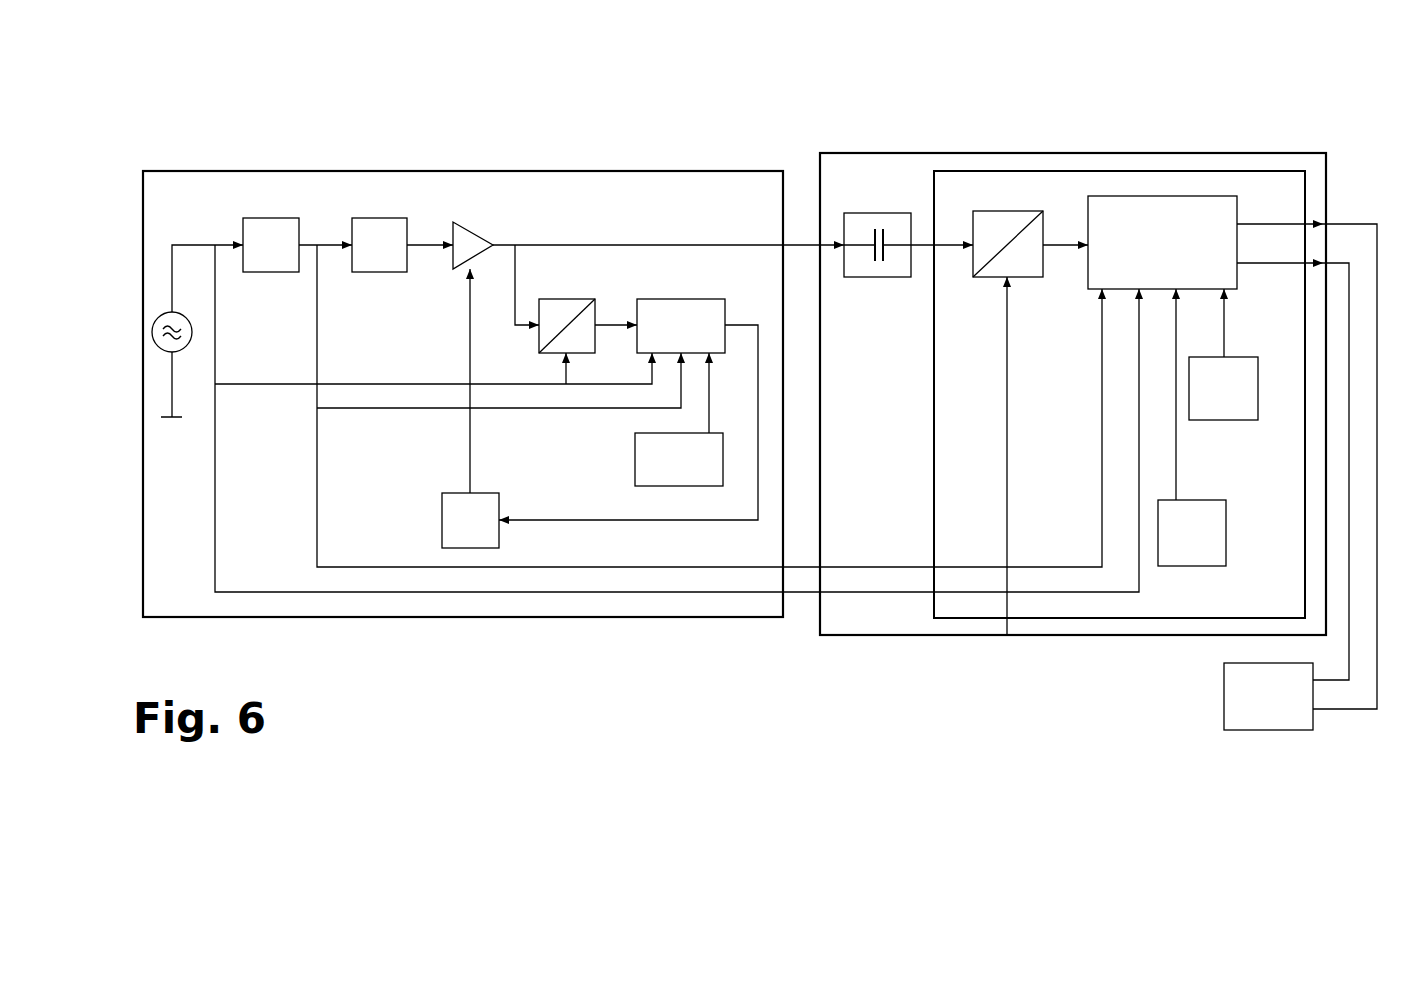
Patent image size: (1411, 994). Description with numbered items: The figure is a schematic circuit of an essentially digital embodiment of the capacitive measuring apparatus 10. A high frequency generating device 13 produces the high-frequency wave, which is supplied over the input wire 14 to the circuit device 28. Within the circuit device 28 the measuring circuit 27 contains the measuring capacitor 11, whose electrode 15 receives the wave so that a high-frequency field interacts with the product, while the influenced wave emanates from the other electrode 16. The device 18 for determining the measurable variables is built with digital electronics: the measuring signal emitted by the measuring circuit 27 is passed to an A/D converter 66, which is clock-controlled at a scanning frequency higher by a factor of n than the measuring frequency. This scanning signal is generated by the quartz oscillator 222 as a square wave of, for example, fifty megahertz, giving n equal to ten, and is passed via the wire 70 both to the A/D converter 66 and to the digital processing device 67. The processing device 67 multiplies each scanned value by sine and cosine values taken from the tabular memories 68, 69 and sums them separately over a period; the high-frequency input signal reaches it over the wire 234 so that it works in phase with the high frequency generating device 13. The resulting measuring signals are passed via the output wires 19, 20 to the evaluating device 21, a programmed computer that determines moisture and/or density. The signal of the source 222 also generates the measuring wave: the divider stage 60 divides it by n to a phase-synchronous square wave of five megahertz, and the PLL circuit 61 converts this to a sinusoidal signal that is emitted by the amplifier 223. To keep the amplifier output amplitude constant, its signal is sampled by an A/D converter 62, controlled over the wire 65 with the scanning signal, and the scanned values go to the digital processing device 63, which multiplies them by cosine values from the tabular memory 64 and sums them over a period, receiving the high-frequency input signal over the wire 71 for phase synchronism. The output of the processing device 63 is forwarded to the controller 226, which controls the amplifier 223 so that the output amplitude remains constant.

The capacitive measuring apparatus 10 is at (759, 677).
The measuring capacitor 11 is at (876, 222).
The high frequency generating device 13 is at (537, 171).
The input wire 14 is at (805, 243).
The electrode 15 is at (873, 232).
The other electrode 16 is at (882, 260).
The device for determining the measurable variables 18 is at (1045, 153).
The output wire 19 is at (1353, 223).
The output wire 20 is at (1334, 681).
The evaluating device 21 is at (1253, 730).
The measuring circuit 27 is at (893, 213).
The circuit device 28 is at (1070, 171).
The divider stage 60 is at (272, 218).
The PLL circuit 61 is at (378, 218).
The A/D converter 62 is at (568, 299).
The digital processing device 63 is at (663, 299).
The tabular memory 64 is at (657, 486).
The wire 65 is at (338, 408).
The A/D converter 66 is at (993, 211).
The digital processing device 67 is at (1150, 196).
The tabular memory 68 is at (1240, 420).
The tabular memory 69 is at (1182, 566).
The wire 70 is at (543, 592).
The wire 71 is at (397, 384).
The quartz oscillator 222 is at (152, 332).
The amplifier 223 is at (459, 222).
The controller 226 is at (465, 548).
The wire 234 is at (797, 567).